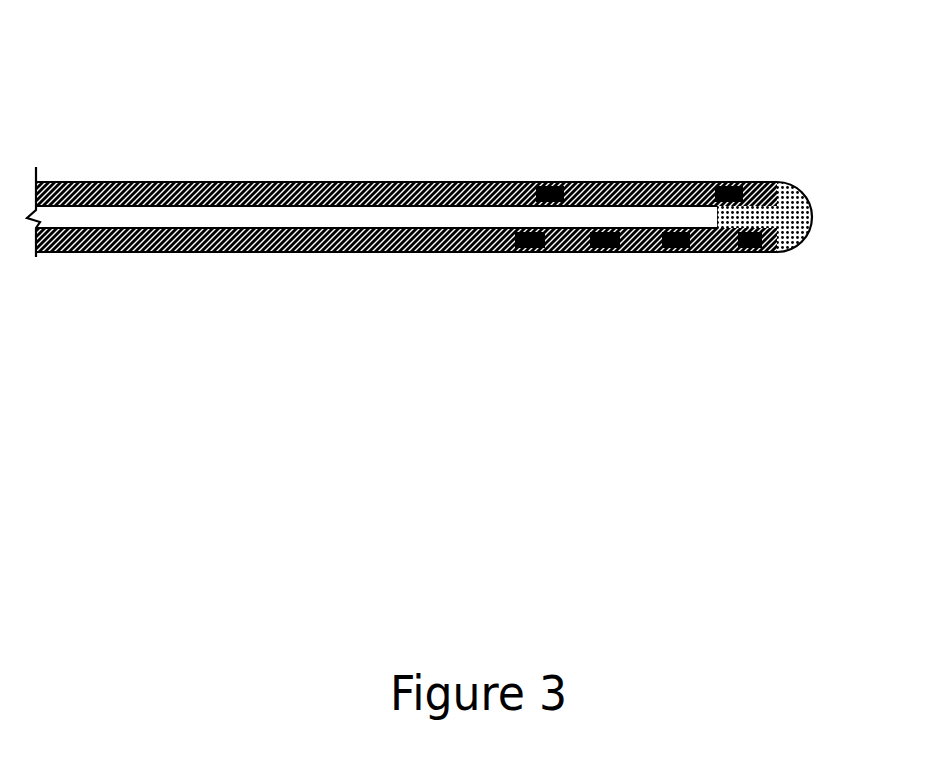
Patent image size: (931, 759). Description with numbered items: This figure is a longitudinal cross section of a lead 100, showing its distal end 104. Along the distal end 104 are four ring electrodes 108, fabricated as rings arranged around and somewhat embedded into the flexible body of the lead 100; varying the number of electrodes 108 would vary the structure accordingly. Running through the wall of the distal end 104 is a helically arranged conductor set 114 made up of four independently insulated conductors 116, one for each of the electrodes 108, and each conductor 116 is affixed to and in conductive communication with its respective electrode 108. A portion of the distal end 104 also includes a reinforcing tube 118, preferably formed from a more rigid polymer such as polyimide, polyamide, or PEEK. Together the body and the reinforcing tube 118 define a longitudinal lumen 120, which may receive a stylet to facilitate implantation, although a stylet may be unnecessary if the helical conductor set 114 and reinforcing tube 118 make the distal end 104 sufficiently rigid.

The lead 100 is at (560, 88).
The distal end 104 is at (408, 156).
The ring electrodes 108 is at (527, 252).
The conductor set 114 is at (290, 182).
The conductors 116 is at (548, 182).
The reinforcing tube 118 is at (481, 207).
The longitudinal lumen 120 is at (293, 229).